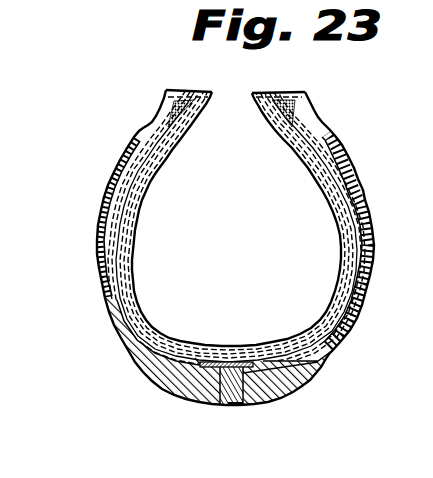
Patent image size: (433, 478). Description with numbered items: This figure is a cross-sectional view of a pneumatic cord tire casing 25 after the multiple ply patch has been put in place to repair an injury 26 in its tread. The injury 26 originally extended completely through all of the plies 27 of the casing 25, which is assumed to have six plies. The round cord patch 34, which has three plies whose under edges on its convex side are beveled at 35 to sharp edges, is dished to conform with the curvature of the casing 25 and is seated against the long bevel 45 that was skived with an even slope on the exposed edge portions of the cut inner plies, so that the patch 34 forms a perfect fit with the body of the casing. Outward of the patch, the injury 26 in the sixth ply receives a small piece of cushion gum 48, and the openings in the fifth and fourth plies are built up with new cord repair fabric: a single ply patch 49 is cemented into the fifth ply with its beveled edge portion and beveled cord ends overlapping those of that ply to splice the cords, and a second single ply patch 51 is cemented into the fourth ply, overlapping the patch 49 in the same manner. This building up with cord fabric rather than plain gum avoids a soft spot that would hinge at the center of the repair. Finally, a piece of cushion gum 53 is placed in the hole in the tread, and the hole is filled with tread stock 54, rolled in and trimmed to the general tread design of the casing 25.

The pneumatic cord tire casing 25 is at (348, 153).
The plies 27 is at (333, 169).
The round cord patch 34 is at (299, 328).
The beveled edges 35 is at (129, 211).
The long bevel 45 is at (123, 222).
The cushion gum 48 is at (240, 364).
The single ply patch 49 is at (198, 358).
The single ply patch 51 is at (222, 357).
The cushion gum 53 is at (318, 368).
The injury 26 is at (212, 402).
The tread stock 54 is at (239, 404).